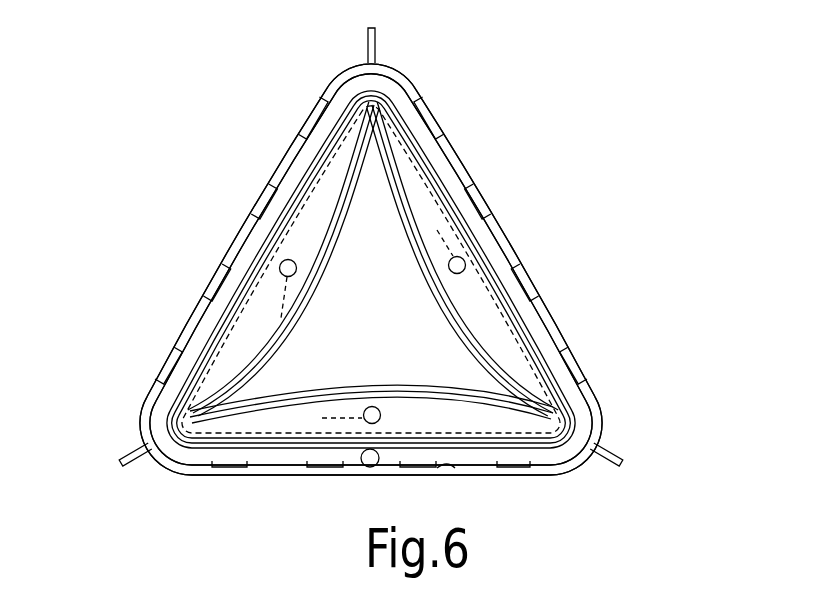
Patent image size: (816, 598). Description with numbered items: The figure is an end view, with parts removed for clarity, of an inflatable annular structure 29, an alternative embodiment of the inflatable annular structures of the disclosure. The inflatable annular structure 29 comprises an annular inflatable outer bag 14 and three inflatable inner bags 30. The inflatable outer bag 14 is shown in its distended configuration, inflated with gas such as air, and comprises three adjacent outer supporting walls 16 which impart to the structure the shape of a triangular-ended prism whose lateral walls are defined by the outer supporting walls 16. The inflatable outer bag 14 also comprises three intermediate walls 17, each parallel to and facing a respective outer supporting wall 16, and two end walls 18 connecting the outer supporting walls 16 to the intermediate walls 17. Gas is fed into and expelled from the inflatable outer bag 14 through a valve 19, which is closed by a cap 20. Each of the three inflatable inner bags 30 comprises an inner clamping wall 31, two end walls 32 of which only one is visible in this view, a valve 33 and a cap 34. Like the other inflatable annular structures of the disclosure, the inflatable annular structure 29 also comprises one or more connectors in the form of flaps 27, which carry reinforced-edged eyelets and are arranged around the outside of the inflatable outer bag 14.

The inflatable outer bag 14 is at (542, 268).
The outer supporting wall 16 is at (247, 243).
The intermediate wall 17 is at (240, 297).
The end wall 18 is at (186, 330).
The valve 19 is at (372, 468).
The cap 20 is at (447, 468).
The flap 27 is at (375, 43).
The inflatable annular structure 29 is at (549, 134).
The inflatable inner bag 30 is at (388, 216).
The inner clamping wall 31 is at (430, 298).
The end wall 32 is at (300, 242).
The valve 33 is at (348, 317).
The cap 34 is at (295, 262).